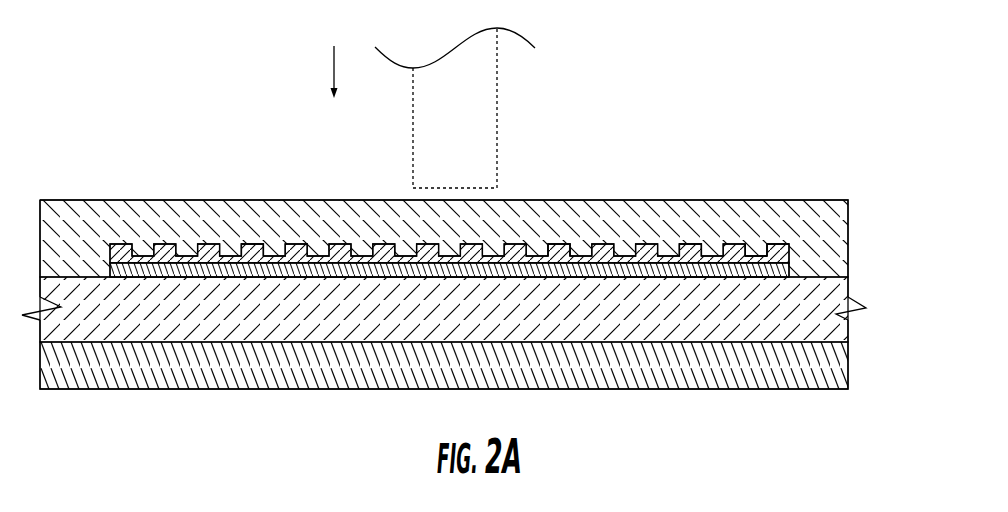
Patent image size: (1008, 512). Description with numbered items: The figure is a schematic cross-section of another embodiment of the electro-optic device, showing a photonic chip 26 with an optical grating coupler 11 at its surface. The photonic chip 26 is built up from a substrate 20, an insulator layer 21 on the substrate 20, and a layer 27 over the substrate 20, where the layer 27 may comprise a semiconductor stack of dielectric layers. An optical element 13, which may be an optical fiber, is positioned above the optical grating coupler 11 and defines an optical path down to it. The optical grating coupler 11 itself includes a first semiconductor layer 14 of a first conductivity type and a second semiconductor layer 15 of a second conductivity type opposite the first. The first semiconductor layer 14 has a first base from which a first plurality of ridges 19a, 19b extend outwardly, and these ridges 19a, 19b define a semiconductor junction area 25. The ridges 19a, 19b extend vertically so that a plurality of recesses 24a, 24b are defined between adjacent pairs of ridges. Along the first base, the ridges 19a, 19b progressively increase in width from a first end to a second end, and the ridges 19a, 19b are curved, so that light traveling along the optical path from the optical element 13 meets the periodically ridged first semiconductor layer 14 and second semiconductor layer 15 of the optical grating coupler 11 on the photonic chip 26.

The optical grating coupler 11 is at (256, 233).
The optical element 13 is at (483, 92).
The first semiconductor layer 14 is at (694, 235).
The second semiconductor layer 15 is at (842, 270).
The first ridge 19a is at (777, 250).
The first ridge 19b is at (738, 250).
The substrate 20 is at (837, 368).
The insulator layer 21 is at (838, 290).
The recess 24a is at (757, 275).
The recess 24b is at (700, 279).
The semiconductor junction area 25 is at (563, 243).
The photonic chip 26 is at (336, 57).
The layer 27 is at (355, 200).